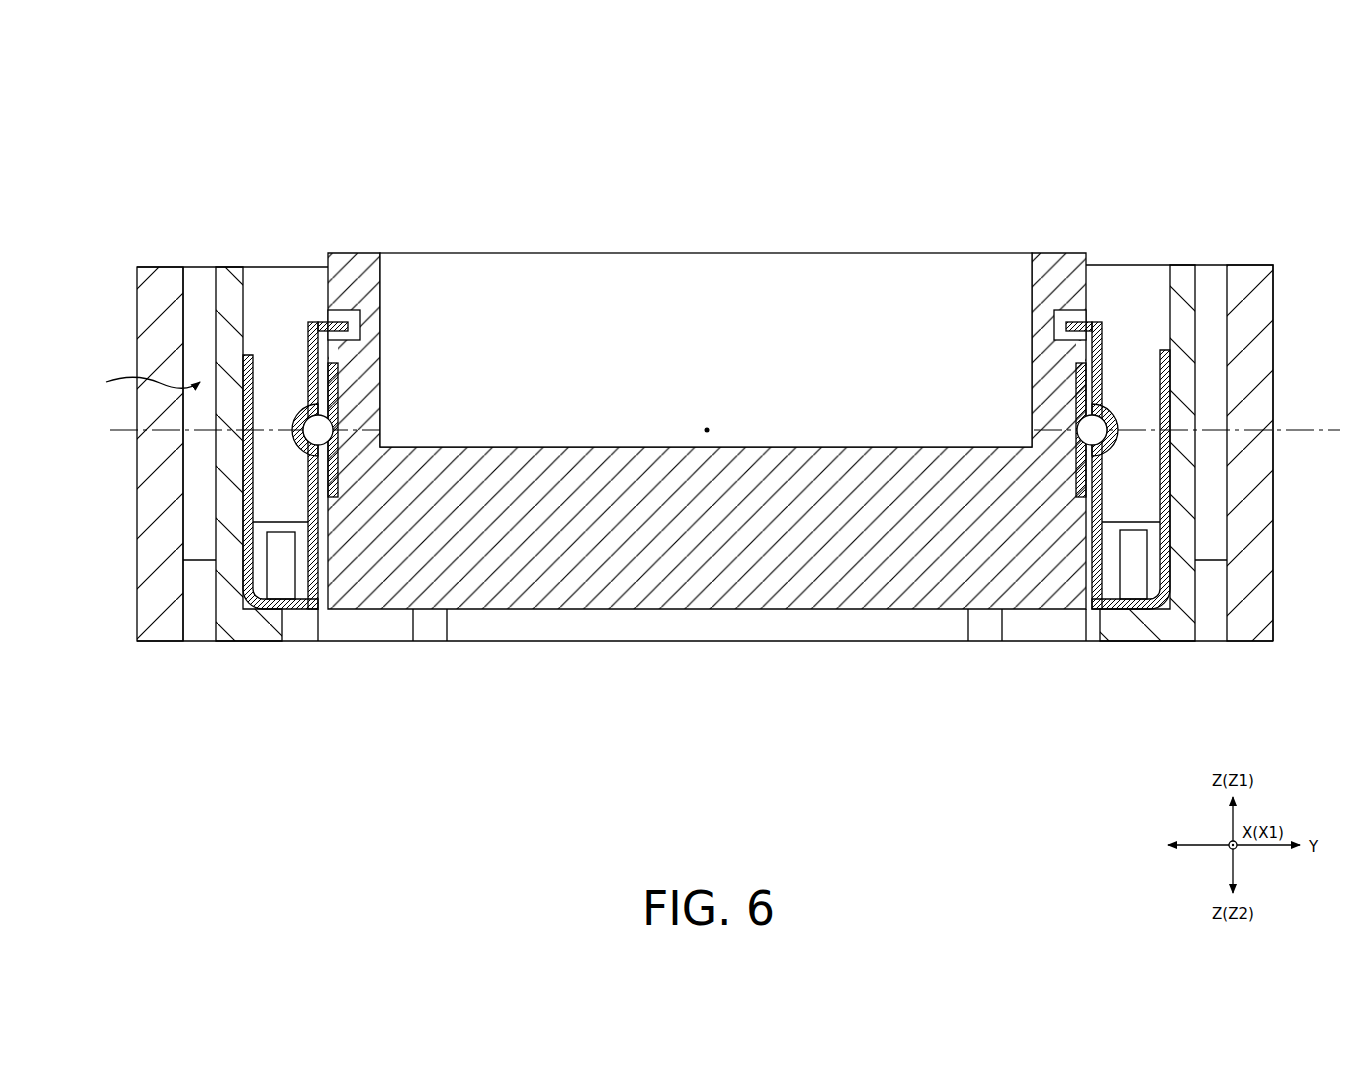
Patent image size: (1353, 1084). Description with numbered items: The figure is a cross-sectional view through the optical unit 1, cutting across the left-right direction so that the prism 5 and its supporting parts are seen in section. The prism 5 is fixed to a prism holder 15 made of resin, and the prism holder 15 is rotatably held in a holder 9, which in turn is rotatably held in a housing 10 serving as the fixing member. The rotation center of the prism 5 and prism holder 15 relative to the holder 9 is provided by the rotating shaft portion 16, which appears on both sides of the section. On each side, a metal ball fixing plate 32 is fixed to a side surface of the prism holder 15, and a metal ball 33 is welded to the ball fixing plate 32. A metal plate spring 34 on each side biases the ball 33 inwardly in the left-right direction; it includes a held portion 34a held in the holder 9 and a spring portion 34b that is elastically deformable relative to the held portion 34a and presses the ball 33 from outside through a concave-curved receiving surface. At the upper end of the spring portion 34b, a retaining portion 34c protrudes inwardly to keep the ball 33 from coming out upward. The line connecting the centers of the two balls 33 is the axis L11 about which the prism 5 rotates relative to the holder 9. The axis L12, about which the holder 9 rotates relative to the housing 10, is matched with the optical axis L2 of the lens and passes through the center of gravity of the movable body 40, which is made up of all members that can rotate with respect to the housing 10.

The optical unit 1 is at (1202, 128).
The prism 5 is at (836, 253).
The holder 9 is at (228, 267).
The housing 10 is at (160, 267).
The prism holder 15 is at (355, 253).
The rotating shaft portion 16 is at (140, 385).
The ball fixing plate 32 is at (338, 383).
The ball 33 is at (333, 425).
The plate spring 34 is at (268, 612).
The held portion 34a is at (712, 615).
The spring portion 34b is at (308, 350).
The retaining portion 34c is at (348, 330).
The movable body 40 is at (1180, 265).
The optical axis L2 is at (707, 428).
The axis L12 is at (709, 397).
The axis L11 is at (897, 428).